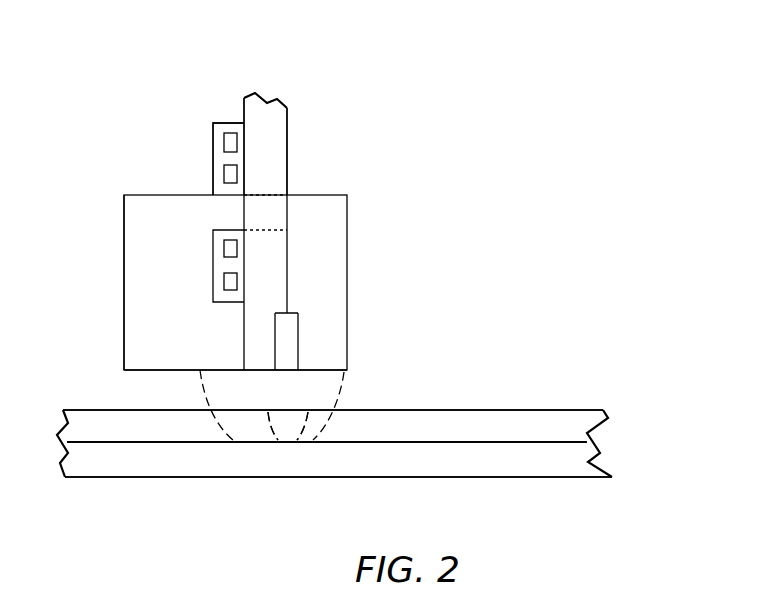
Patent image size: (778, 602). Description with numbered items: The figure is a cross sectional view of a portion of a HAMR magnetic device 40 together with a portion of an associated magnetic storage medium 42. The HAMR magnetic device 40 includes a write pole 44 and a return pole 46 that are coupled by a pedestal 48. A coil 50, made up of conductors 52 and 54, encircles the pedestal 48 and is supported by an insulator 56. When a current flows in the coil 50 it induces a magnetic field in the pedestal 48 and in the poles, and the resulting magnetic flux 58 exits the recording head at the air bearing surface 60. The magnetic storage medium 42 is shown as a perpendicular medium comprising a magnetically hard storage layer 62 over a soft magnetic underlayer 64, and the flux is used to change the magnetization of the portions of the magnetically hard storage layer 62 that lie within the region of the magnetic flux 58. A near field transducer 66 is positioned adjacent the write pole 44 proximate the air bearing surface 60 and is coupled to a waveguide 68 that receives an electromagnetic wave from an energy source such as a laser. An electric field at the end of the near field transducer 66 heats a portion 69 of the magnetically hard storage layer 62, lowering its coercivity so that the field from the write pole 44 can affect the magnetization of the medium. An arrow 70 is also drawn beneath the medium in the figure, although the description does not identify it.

The HAMR magnetic device 40 is at (436, 125).
The magnetic storage medium 42 is at (608, 384).
The write pole 44 is at (328, 236).
The return pole 46 is at (147, 312).
The pedestal 48 is at (270, 215).
The coil 50 is at (200, 111).
The conductor 52 is at (223, 283).
The conductor 54 is at (223, 175).
The insulator 56 is at (220, 122).
The magnetic flux 58 is at (340, 393).
The air bearing surface 60 is at (140, 372).
The magnetically hard storage layer 62 is at (563, 432).
The soft magnetic underlayer 64 is at (560, 455).
The near field transducer 66 is at (290, 335).
The waveguide 68 is at (263, 158).
The heated portion of magnetically hard layer 69 is at (275, 432).
The direction of travel 70 is at (255, 493).